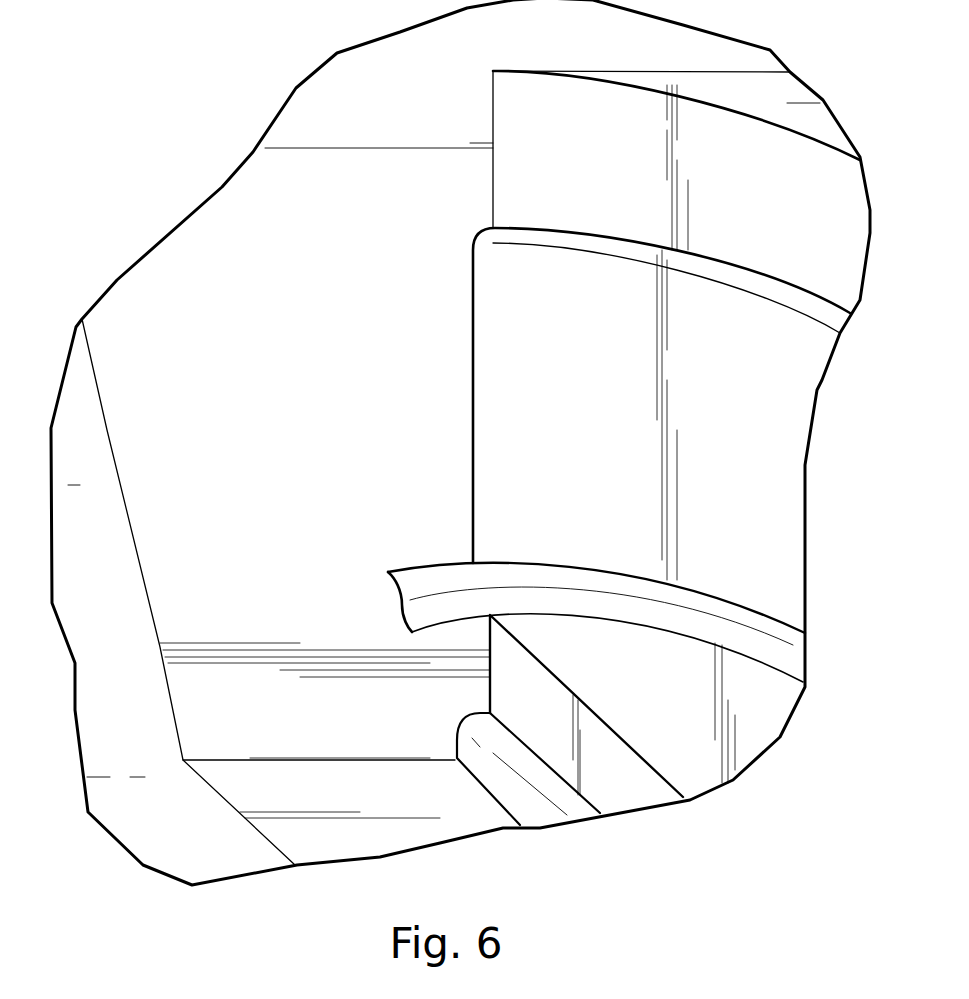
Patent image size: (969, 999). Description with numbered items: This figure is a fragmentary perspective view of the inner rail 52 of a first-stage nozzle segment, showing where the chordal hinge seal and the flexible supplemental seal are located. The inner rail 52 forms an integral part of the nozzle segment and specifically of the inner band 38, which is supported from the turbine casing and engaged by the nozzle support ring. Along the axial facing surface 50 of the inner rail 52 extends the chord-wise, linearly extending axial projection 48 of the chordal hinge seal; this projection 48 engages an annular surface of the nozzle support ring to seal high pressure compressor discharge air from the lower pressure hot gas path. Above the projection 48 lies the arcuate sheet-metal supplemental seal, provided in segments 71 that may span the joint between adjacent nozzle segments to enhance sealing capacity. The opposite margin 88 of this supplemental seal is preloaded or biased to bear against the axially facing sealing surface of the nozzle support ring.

The inner band 38 is at (428, 62).
The axial facing surface 50 is at (536, 441).
The inner rail 52 is at (252, 338).
The segments 71 is at (438, 565).
The opposite margin 88 is at (583, 615).
The axial projection 48 is at (610, 790).